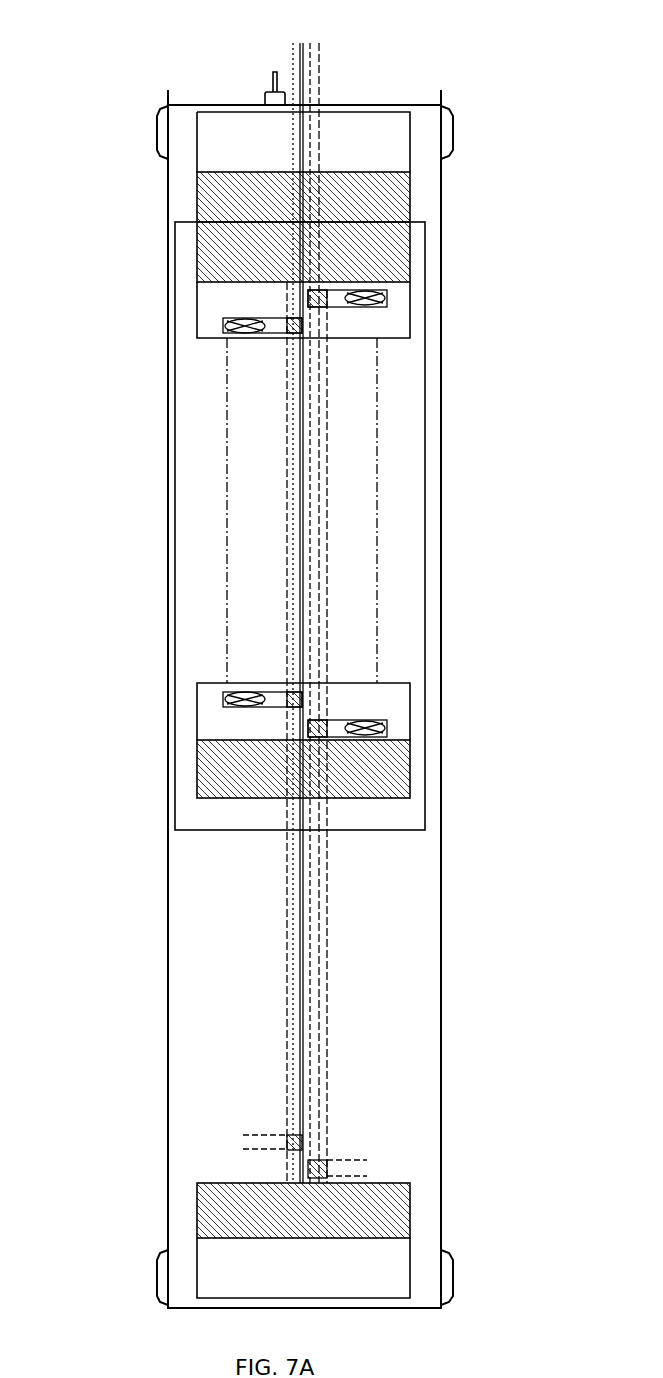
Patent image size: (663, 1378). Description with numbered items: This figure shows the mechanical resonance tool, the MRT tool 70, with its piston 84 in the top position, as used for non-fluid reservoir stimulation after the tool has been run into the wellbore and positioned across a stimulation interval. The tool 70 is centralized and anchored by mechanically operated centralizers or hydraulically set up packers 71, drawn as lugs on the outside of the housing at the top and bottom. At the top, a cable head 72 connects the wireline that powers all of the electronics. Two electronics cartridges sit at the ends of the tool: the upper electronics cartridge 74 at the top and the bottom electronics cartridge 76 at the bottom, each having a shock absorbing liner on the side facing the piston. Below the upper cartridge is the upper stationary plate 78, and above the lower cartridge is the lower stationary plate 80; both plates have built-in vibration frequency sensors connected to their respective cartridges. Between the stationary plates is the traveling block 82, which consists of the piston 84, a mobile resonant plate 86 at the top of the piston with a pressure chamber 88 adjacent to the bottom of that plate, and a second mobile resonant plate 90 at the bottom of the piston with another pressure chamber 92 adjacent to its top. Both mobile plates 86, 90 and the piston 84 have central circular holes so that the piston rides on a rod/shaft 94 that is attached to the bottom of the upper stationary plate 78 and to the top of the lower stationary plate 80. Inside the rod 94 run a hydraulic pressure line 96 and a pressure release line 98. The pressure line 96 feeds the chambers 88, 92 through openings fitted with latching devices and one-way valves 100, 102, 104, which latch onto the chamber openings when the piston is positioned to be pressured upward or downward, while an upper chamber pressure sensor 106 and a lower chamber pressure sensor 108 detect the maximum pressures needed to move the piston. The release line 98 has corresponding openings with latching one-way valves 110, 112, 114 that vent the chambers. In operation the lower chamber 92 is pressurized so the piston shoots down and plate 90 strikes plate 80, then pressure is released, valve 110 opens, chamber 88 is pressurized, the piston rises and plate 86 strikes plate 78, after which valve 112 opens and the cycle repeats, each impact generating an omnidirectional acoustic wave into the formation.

The MRT tool 70 is at (441, 610).
The mechanically operated centralizers or hydraulically set up packers 71 is at (157, 132).
The cable head 72 is at (268, 80).
The upper electronics cartridge 74 is at (240, 157).
The bottom electronics cartridge 76 is at (215, 1258).
The upper stationary plate 78 is at (220, 188).
The lower stationary plate 80 is at (210, 1200).
The traveling block 82 is at (425, 490).
The piston 84 is at (227, 497).
The mobile resonant plate 86 is at (220, 247).
The pressure chamber 88 is at (225, 298).
The mobile resonant plate 90 is at (218, 777).
The pressure chamber 92 is at (208, 720).
The rod/shaft 94 is at (287, 400).
The hydraulic pressure line 96 is at (320, 43).
The pressure release line 98 is at (293, 43).
The one-way valve 100 is at (327, 307).
The one-way valve 102 is at (327, 728).
The one-way valve 104 is at (367, 1168).
The upper chamber pressure sensor 106 is at (385, 298).
The lower chamber pressure sensor 108 is at (385, 728).
The one-way valve 110 is at (285, 326).
The one-way valve 112 is at (287, 695).
The one-way valve 114 is at (243, 1140).